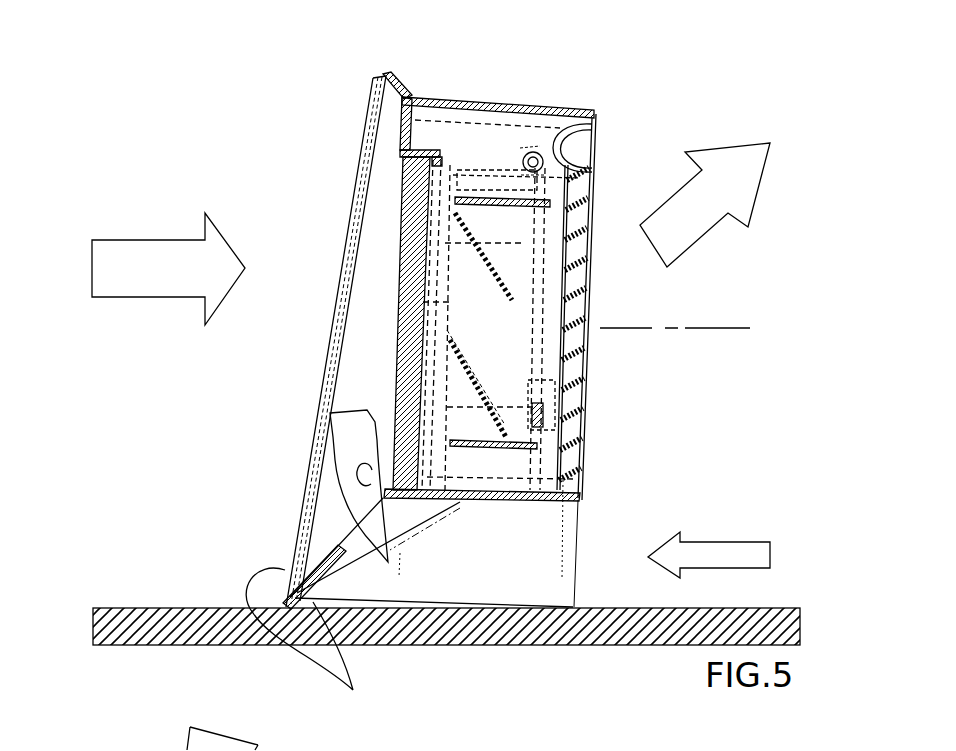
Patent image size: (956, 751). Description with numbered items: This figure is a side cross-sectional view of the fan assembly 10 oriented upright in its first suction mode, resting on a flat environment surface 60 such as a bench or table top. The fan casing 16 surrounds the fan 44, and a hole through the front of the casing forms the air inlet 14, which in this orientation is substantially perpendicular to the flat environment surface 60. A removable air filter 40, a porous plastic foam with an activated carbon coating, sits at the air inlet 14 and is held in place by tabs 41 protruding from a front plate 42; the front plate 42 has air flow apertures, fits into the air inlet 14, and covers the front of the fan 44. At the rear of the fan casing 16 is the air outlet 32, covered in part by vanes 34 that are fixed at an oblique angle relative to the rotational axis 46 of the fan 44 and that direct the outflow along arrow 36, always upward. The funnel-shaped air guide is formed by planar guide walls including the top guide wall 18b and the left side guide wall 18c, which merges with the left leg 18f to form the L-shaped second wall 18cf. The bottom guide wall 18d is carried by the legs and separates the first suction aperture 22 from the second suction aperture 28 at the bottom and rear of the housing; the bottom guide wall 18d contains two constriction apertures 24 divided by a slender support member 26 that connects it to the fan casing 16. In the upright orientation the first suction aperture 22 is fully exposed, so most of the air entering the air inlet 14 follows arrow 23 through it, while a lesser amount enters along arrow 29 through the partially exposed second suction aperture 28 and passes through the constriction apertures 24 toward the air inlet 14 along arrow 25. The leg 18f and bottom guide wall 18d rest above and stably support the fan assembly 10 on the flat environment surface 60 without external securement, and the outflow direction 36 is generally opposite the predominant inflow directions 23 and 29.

The fan assembly 10 is at (690, 92).
The air inlet 14 is at (370, 253).
The fan casing 16 is at (537, 110).
The top guide wall 18b is at (395, 92).
The left side guide wall 18c is at (333, 313).
The second wall 18cf is at (331, 648).
The bottom guide wall 18d is at (320, 565).
The left leg 18f is at (573, 553).
The first suction aperture 22 is at (305, 268).
The air inflow arrow 23 is at (162, 238).
The constriction apertures 24 is at (364, 566).
The air inflow arrow 25 is at (330, 487).
The slender support member 26 is at (417, 530).
The second suction aperture 28 is at (649, 522).
The air inflow arrow 29 is at (732, 540).
The air outlet 32 is at (632, 209).
The vanes 34 is at (628, 362).
The air outflow arrow 36 is at (762, 184).
The air filter 40 is at (398, 202).
The tabs 41 is at (397, 152).
The front plate 42 is at (402, 128).
The fan 44 is at (490, 387).
The rotational axis 46 is at (728, 328).
The flat environment surface 60 is at (150, 608).